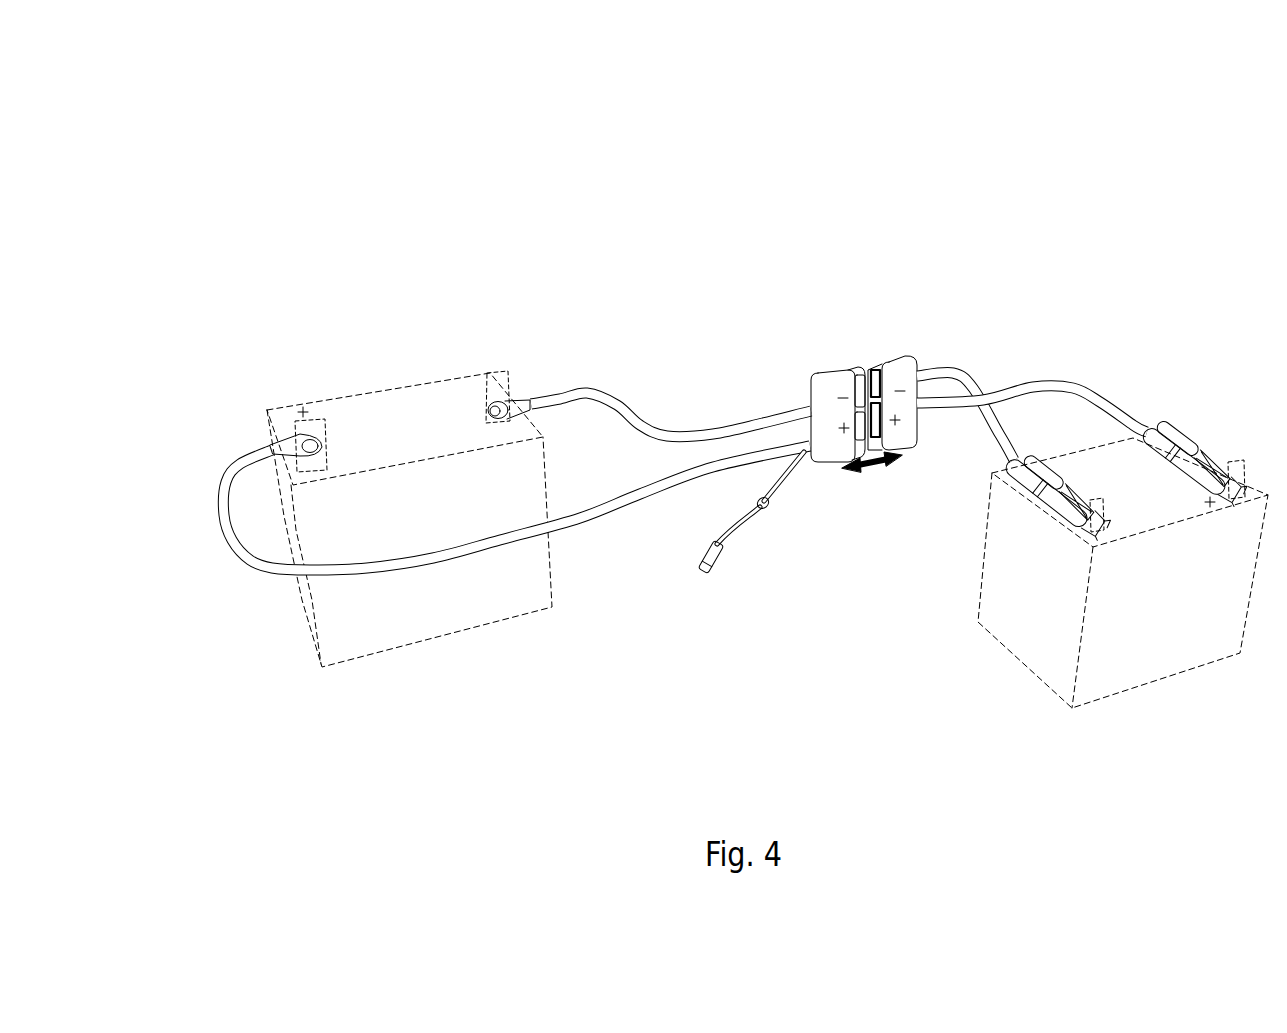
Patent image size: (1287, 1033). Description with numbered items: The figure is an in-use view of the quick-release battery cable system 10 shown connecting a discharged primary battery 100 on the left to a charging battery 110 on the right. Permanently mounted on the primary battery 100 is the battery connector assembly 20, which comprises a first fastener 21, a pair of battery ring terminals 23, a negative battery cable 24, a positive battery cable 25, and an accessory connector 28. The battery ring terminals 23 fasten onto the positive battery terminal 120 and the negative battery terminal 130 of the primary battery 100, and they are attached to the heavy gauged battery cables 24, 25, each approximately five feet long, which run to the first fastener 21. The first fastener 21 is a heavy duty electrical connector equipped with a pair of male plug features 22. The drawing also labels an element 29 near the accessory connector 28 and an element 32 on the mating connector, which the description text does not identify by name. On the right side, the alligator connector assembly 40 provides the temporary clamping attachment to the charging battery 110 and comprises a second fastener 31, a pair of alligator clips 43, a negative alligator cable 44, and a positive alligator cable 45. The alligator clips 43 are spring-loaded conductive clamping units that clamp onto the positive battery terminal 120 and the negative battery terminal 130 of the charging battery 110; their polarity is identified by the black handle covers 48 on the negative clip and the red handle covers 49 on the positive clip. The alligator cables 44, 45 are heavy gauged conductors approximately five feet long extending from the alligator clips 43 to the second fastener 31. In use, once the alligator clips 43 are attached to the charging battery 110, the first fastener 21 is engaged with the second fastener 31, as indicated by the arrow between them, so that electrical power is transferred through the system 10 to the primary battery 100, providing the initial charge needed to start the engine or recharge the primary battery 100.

The quick-release battery cable system 10 is at (300, 157).
The battery connector assembly 20 is at (603, 346).
The first fastener 21 is at (822, 397).
The male plug features 22 is at (857, 422).
The battery ring terminals 23 is at (283, 440).
The negative battery cable 24 is at (656, 410).
The positive battery cable 25 is at (641, 500).
The accessory connector 28 is at (715, 572).
The fuse lead wire 29 is at (767, 500).
The second fastener 31 is at (905, 430).
The connector sockets 32 is at (876, 370).
The alligator connector assembly 40 is at (1017, 342).
The alligator clips 43 is at (1080, 493).
The negative alligator cable 44 is at (960, 372).
The positive alligator cable 45 is at (1085, 388).
The black handle covers 48 is at (1048, 466).
The red handle covers 49 is at (1185, 438).
The primary battery 100 is at (372, 622).
The charging battery 110 is at (1180, 645).
The positive battery terminal 120 is at (320, 421).
The negative battery terminal 130 is at (487, 392).